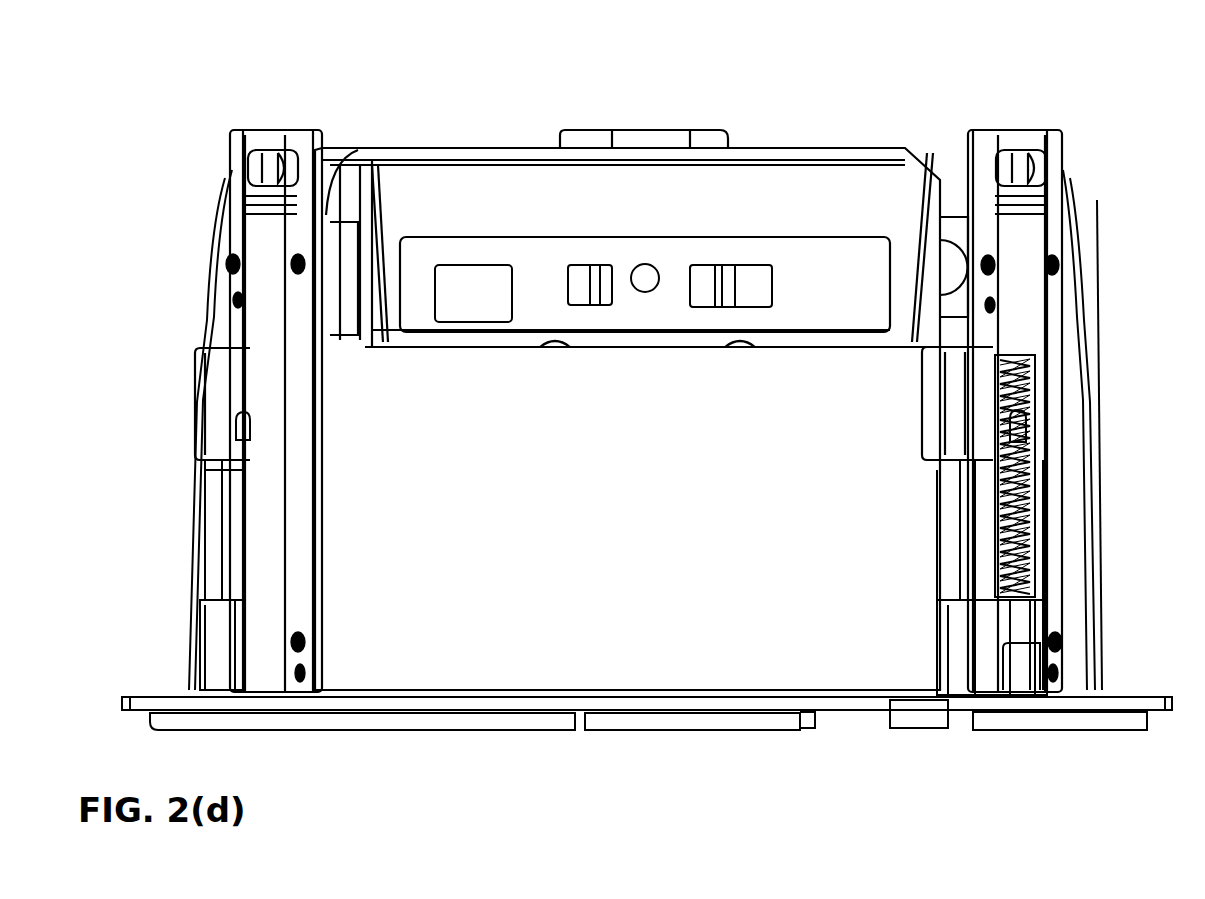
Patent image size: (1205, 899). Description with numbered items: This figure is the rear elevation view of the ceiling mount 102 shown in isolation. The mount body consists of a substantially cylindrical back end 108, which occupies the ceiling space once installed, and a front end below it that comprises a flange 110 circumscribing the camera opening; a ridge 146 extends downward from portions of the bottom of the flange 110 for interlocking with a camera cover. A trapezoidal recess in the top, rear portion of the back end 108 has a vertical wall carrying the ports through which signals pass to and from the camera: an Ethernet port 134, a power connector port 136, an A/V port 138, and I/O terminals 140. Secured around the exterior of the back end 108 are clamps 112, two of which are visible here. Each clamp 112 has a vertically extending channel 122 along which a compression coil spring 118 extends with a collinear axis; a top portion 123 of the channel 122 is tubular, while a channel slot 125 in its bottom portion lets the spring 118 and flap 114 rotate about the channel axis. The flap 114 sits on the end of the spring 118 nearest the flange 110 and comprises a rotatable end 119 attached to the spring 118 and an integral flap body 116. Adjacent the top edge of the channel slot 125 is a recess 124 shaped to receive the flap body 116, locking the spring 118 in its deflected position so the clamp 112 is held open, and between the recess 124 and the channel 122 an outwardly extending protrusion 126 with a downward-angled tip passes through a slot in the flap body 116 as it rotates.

The ceiling mount 102 is at (870, 80).
The back end 108 is at (472, 628).
The flange 110 is at (1145, 695).
The clamp 112 is at (243, 112).
The flap 114 is at (180, 652).
The flap body 116 is at (997, 660).
The compression coil spring 118 is at (980, 513).
The rotatable end 119 is at (1028, 625).
The channel 122 is at (222, 288).
The top portion 123 is at (265, 325).
The recess 124 is at (218, 388).
The channel slot 125 is at (245, 545).
The protrusion 126 is at (240, 425).
The Ethernet port 134 is at (476, 282).
The power connector port 136 is at (588, 285).
The A/V port 138 is at (645, 275).
The I/O terminals 140 is at (735, 285).
The ridge 146 is at (220, 722).